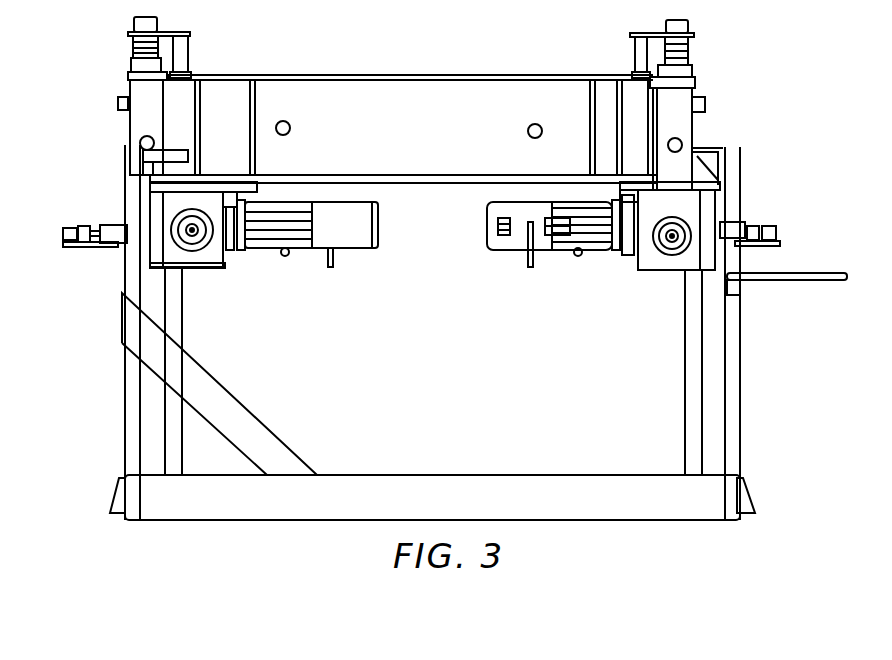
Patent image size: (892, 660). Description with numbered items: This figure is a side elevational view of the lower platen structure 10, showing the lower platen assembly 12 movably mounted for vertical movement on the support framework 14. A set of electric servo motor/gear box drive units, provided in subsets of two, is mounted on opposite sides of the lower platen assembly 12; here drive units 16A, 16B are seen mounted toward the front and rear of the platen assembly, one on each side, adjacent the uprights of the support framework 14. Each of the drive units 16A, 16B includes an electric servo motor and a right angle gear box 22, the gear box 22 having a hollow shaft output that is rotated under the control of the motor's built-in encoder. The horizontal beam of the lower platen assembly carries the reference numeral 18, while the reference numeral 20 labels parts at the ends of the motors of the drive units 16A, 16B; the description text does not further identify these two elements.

The lower platen structure 10 is at (88, 150).
The lower platen assembly 12 is at (424, 70).
The support framework 14 is at (122, 420).
The drive unit 16A is at (555, 262).
The drive unit 16B is at (272, 262).
The beam 18 is at (336, 92).
The motor mount 20 is at (376, 241).
The right angle gear box 22 is at (231, 253).